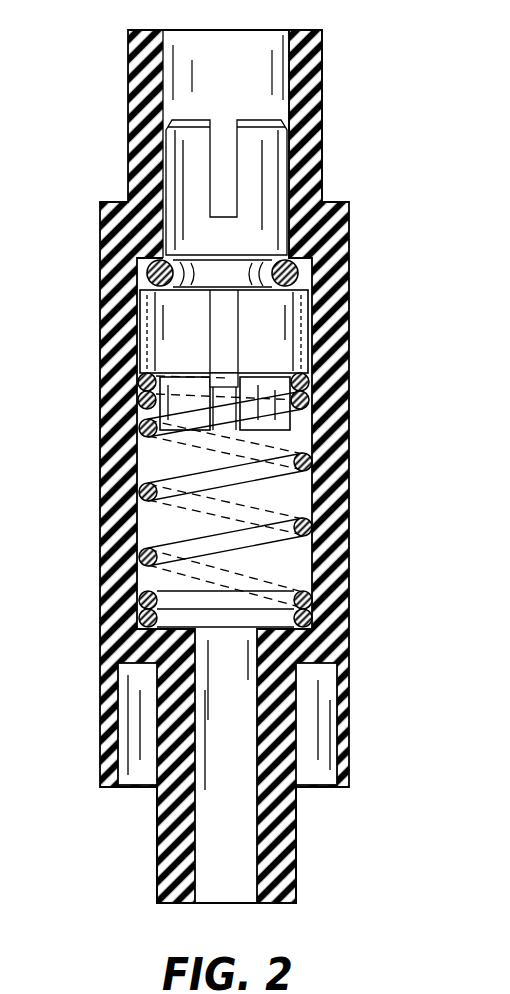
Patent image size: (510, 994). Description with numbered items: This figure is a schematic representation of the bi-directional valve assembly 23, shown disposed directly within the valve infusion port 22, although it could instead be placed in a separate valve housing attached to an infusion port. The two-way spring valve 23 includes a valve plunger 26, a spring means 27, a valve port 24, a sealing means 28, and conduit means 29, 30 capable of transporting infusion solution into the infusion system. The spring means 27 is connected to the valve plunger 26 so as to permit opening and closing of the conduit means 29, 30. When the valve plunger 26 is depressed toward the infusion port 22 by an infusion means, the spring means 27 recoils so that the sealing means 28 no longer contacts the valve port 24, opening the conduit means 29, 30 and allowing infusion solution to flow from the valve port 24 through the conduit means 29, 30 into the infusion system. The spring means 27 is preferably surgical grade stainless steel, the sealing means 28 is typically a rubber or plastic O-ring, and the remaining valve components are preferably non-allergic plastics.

The valve infusion port 22 is at (349, 410).
The bi-directional valve assembly 23 is at (106, 330).
The valve port 24 is at (322, 125).
The valve plunger 26 is at (309, 297).
The spring means 27 is at (150, 483).
The sealing means 28 is at (150, 273).
The conduit means 29 is at (223, 153).
The conduit means 30 is at (222, 320).